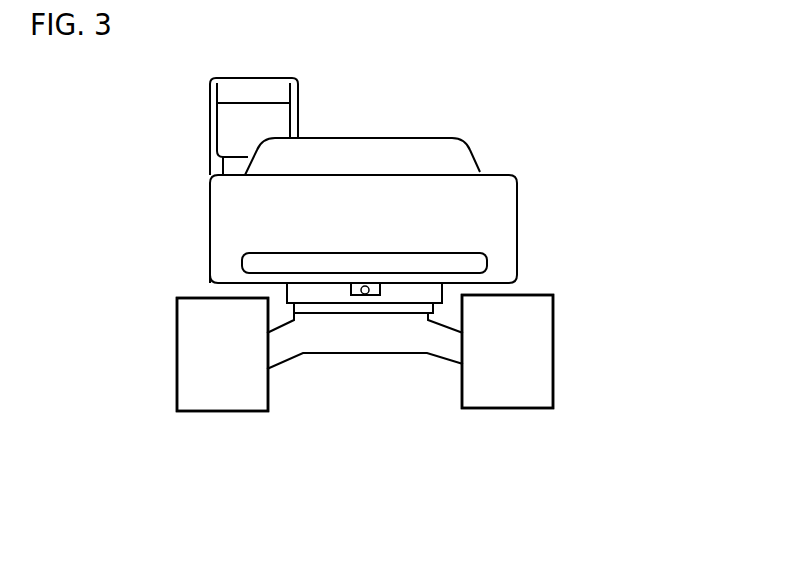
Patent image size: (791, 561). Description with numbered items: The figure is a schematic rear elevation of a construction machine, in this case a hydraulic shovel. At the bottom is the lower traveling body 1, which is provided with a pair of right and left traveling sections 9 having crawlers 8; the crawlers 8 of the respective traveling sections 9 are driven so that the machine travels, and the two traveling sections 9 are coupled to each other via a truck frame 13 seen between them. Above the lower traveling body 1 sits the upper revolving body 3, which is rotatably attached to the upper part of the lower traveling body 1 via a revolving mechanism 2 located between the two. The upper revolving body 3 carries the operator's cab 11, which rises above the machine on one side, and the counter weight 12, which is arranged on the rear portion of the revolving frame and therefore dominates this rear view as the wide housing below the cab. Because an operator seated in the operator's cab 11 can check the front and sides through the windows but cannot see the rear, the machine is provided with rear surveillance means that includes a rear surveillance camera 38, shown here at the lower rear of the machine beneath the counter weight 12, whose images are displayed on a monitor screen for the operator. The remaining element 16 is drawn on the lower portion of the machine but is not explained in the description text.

The lower traveling body 1 is at (361, 258).
The revolving mechanism 2 is at (341, 316).
The upper revolving body 3 is at (487, 164).
The crawler 8 is at (177, 386).
The traveling section 9 is at (177, 337).
The operator's cab 11 is at (298, 100).
The counter weight 12 is at (497, 219).
The truck frame 13 is at (443, 350).
The axle support bracket 16 is at (310, 293).
The rear surveillance camera 38 is at (368, 297).